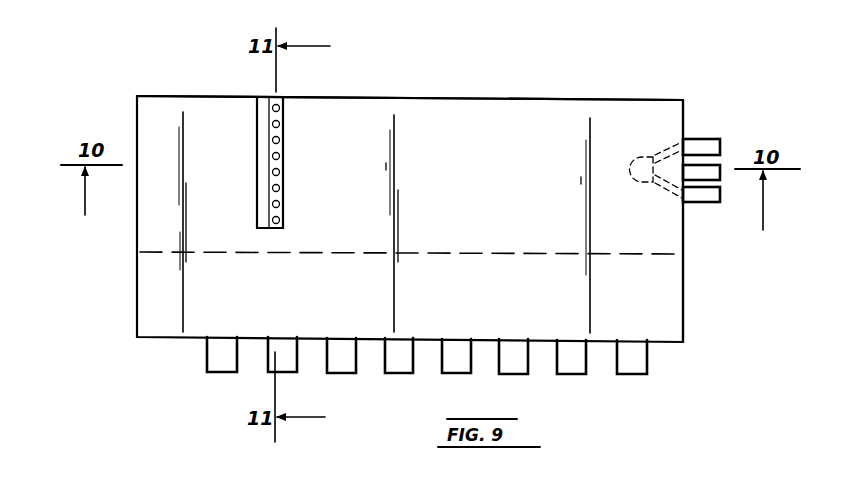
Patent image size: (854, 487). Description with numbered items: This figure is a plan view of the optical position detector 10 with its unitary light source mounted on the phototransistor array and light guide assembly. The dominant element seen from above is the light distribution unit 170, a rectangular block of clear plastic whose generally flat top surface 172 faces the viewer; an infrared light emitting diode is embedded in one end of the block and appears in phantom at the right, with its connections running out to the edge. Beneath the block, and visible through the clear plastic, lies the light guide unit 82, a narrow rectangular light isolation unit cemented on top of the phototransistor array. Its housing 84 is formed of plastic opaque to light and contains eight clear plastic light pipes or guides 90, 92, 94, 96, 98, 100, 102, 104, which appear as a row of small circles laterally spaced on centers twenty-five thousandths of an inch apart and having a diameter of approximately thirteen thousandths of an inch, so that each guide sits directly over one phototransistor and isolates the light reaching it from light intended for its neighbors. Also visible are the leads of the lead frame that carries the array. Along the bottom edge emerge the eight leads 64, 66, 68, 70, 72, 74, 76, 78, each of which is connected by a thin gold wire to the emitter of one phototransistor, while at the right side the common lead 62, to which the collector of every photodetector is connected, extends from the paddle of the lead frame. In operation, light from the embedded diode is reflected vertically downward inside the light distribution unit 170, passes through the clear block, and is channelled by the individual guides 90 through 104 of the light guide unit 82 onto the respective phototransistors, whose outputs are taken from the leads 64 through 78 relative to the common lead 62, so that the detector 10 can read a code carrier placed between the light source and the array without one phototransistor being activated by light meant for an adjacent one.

The optical position detector 10 is at (450, 80).
The common lead 62 is at (712, 171).
The lead 64 is at (631, 364).
The lead 66 is at (572, 364).
The lead 68 is at (517, 363).
The lead 70 is at (460, 363).
The lead 72 is at (403, 363).
The lead 74 is at (347, 363).
The lead 76 is at (289, 363).
The lead 78 is at (219, 363).
The light guide unit 82 is at (271, 94).
The housing 84 is at (262, 101).
The light guide 90 is at (282, 101).
The light guide 92 is at (280, 124).
The light guide 94 is at (280, 140).
The light guide 96 is at (280, 156).
The light guide 98 is at (280, 172).
The light guide 100 is at (280, 188).
The light guide 102 is at (280, 204).
The light guide 104 is at (280, 220).
The light distribution unit 170 is at (686, 118).
The top surface 172 is at (530, 117).